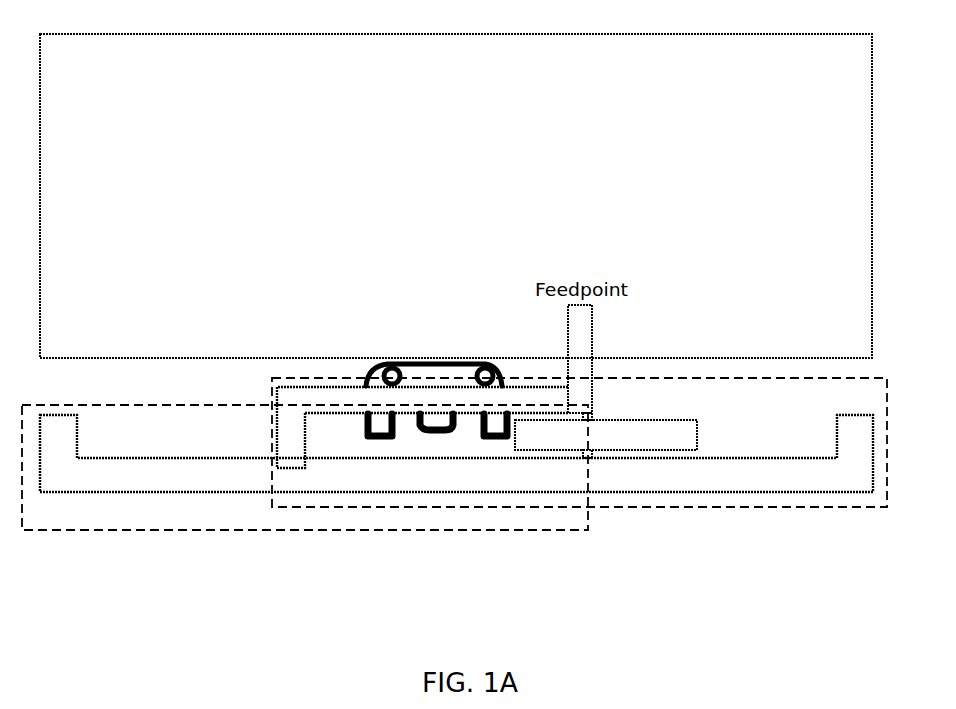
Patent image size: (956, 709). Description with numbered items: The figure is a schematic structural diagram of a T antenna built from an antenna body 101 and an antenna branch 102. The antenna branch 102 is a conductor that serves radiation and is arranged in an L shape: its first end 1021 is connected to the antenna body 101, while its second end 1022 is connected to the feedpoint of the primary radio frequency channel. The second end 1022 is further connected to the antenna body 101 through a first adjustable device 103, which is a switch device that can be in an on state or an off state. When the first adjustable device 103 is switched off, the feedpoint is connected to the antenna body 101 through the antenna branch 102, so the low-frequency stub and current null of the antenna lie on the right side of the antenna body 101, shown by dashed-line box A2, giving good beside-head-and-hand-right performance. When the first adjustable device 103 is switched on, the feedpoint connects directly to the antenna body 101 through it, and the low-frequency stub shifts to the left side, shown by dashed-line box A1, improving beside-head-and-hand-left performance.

The antenna body 101 is at (463, 490).
The antenna branch 102 is at (386, 427).
The first end of the antenna branch 1021 is at (297, 455).
The second end of the antenna branch 1022 is at (565, 395).
The first adjustable device 103 is at (697, 433).
The dashed-line box A1 is at (57, 515).
The dashed-line box A2 is at (865, 497).